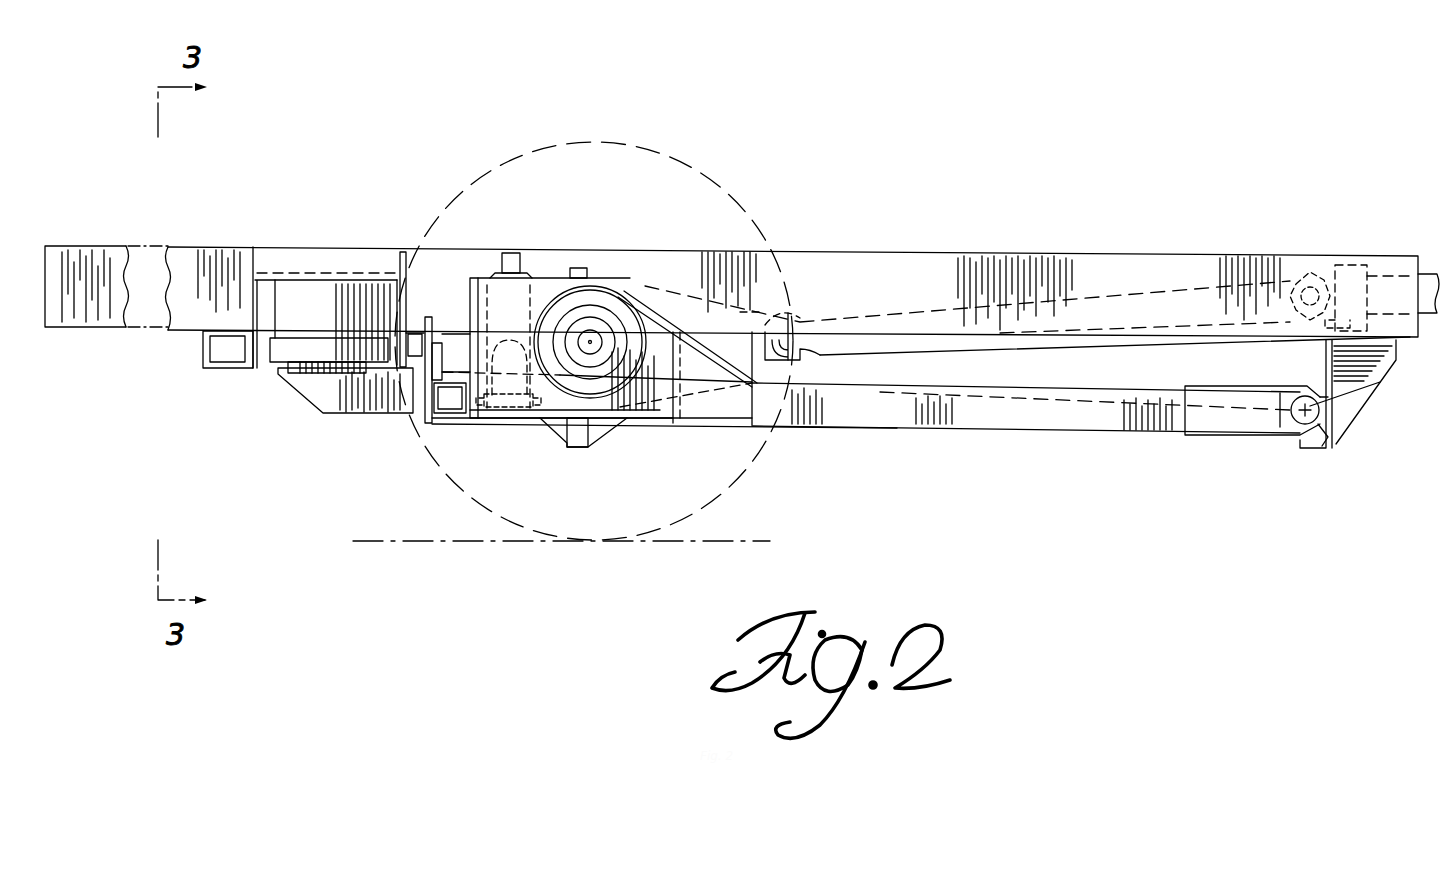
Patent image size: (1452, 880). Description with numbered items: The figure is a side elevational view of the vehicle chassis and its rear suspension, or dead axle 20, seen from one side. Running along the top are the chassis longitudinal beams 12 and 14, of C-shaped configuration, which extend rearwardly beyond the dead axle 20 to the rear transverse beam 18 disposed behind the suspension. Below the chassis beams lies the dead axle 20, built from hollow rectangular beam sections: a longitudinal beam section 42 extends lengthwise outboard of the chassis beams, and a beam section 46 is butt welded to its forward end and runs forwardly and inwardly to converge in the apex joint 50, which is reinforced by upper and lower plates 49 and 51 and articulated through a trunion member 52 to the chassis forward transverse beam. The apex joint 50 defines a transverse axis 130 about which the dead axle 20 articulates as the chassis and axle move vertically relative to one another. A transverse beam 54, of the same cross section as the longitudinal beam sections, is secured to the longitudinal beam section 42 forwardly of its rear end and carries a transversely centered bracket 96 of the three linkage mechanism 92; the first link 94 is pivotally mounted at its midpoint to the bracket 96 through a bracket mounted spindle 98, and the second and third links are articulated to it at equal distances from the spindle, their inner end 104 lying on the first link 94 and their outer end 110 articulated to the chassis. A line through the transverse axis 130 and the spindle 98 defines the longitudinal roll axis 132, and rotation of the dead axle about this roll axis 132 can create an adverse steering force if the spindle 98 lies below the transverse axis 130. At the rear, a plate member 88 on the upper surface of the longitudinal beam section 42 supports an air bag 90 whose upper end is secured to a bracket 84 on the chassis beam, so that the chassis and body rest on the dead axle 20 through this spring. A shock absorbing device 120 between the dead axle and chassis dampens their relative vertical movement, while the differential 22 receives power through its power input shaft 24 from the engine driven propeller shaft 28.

The bracket 84 is at (266, 257).
The longitudinal beam 14 is at (978, 258).
The upper plate 49 is at (1200, 388).
The air bag 90 is at (320, 292).
The rear transverse beam 18 is at (205, 365).
The spindle 98 is at (392, 370).
The plate member 88 is at (303, 375).
The longitudinal beam section 42 is at (347, 412).
The inner end of second link 104 is at (417, 330).
The three linkage mechanism 92 is at (420, 400).
The outer end of third link 110 is at (417, 428).
The bracket 96 is at (440, 352).
The transverse beam 54 is at (453, 415).
The first link 94 is at (425, 425).
The longitudinal beam 12 is at (405, 298).
The shock absorbing device 120 is at (510, 252).
The power input shaft 24 is at (750, 400).
The propeller shaft 28 is at (842, 350).
The differential 22 is at (610, 437).
The beam section 46 is at (1008, 413).
The longitudinal roll axis 132 is at (1063, 400).
The rear suspension 20 is at (1120, 428).
The lower plate 51 is at (1190, 433).
The apex joint 50 is at (1288, 422).
The transverse axis 130 is at (1320, 413).
The trunion member 52 is at (1338, 443).